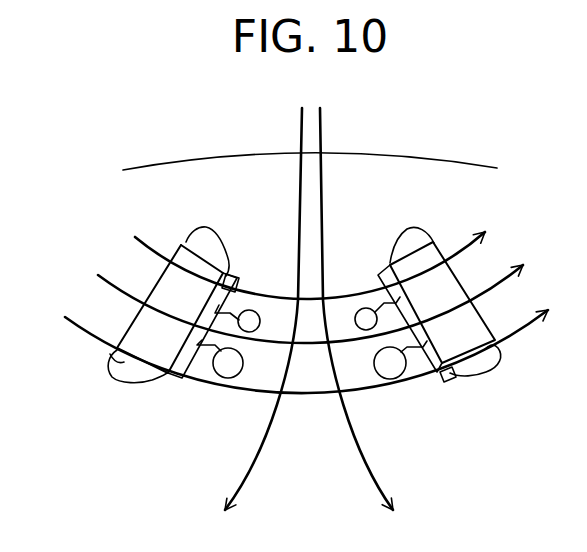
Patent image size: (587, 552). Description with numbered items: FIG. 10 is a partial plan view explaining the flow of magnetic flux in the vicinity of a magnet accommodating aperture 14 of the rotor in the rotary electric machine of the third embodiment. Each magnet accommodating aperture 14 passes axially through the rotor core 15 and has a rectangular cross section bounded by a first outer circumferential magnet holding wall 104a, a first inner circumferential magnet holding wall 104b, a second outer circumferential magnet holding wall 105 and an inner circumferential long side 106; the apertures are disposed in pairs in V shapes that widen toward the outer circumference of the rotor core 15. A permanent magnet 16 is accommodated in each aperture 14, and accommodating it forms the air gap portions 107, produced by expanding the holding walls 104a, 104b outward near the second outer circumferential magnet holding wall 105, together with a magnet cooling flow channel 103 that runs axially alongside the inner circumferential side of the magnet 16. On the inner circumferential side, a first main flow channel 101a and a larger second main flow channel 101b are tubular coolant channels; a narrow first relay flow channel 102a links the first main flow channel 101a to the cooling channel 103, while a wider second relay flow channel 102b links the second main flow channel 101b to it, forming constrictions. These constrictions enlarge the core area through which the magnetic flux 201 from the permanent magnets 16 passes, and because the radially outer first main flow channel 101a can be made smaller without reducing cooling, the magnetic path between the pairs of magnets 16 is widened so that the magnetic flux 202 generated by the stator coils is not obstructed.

The magnet accommodating aperture 14 is at (155, 284).
The rotor core 15 is at (185, 160).
The permanent magnet 16 is at (172, 302).
The first main flow channel 101a is at (249, 310).
The second main flow channel 101b is at (224, 367).
The first relay flow channel 102a is at (232, 306).
The second relay flow channel 102b is at (199, 354).
The magnet cooling flow channel 103 is at (180, 375).
The first outer circumferential magnet holding wall 104a is at (226, 265).
The first inner circumferential magnet holding wall 104b is at (162, 369).
The second outer circumferential magnet holding wall 105 is at (128, 327).
The inner circumferential long side 106 is at (237, 279).
The air gap portion 107 is at (115, 360).
The magnetic flux 201 is at (436, 377).
The magnetic flux 202 is at (321, 170).